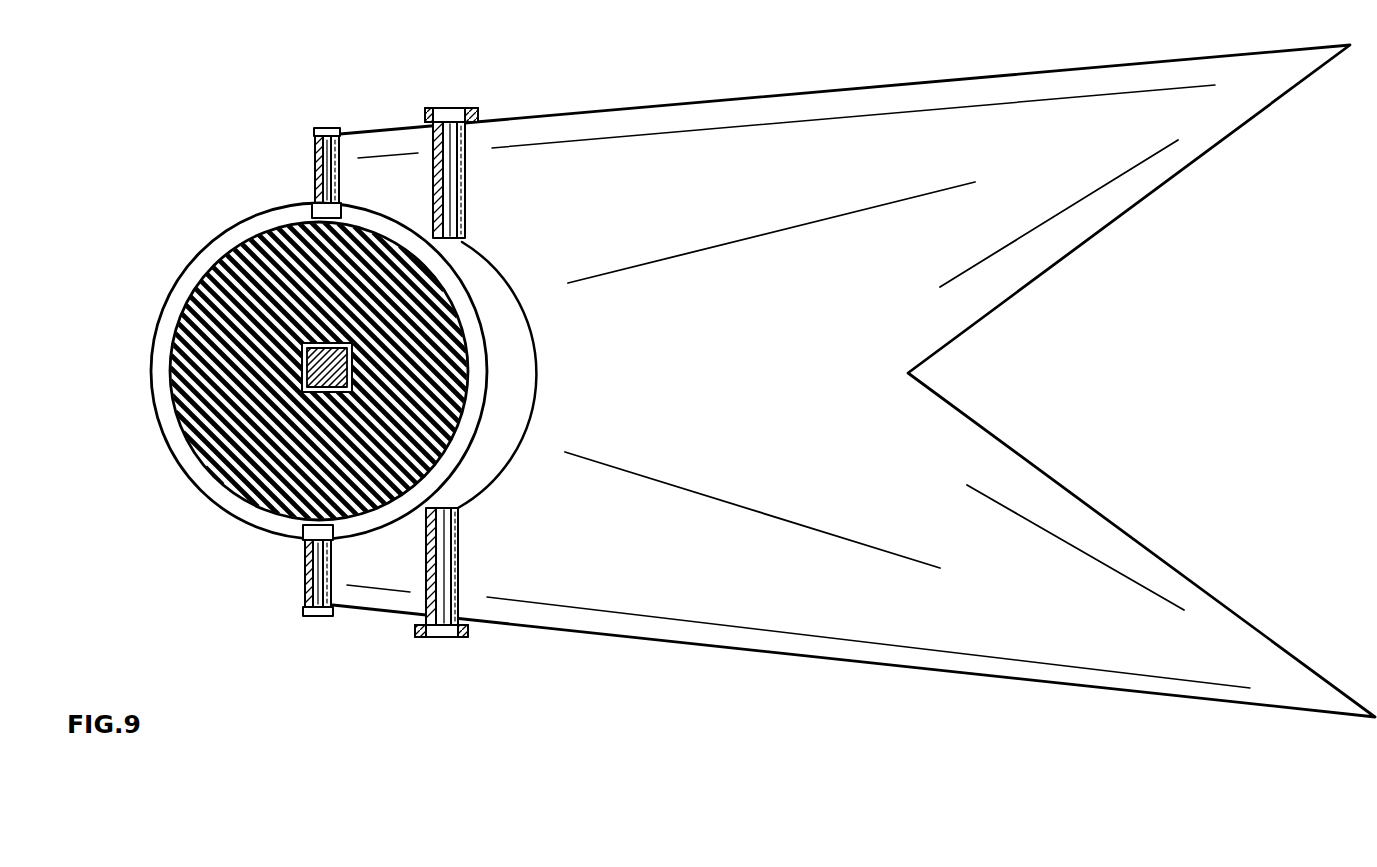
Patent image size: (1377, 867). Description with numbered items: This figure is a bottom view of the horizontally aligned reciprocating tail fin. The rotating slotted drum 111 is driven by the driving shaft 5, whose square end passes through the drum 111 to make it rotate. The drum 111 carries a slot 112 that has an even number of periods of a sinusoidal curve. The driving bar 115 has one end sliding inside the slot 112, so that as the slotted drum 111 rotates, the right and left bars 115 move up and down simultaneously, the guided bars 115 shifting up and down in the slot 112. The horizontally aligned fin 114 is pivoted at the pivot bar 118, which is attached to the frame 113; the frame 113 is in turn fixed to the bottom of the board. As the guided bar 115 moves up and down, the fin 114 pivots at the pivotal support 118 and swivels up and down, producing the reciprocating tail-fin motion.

The driving shaft 5 is at (302, 345).
The rotating slotted drum 111 is at (198, 373).
The slot 112 is at (170, 430).
The frame 113 is at (430, 110).
The horizontally aligned fin 114 is at (785, 568).
The driving bar 115 is at (313, 176).
The pivot bar 118 is at (470, 168).